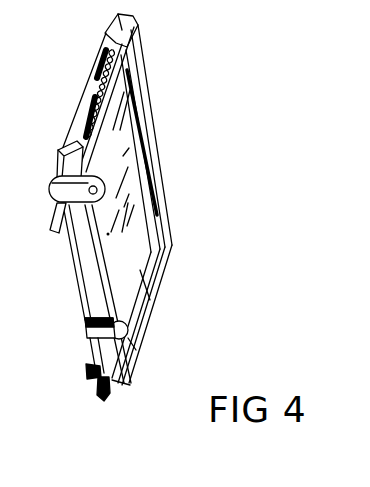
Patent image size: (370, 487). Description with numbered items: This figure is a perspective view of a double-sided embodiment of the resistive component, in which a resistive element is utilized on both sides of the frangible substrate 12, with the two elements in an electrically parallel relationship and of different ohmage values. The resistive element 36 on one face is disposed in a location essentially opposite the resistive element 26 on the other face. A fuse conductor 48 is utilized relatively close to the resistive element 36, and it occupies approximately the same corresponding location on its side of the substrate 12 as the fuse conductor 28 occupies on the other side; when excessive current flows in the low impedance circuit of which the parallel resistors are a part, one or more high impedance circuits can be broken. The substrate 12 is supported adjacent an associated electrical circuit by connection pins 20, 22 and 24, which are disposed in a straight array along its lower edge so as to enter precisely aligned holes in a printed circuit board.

The substrate 12 is at (138, 27).
The fuse conductor 48 is at (100, 52).
The resistive element 36 is at (90, 108).
The connection pin 20 is at (57, 228).
The connection pin 22 is at (89, 370).
The connection pin 24 is at (101, 397).
The resistive element 26 is at (123, 280).
The fuse conductor 28 is at (137, 344).